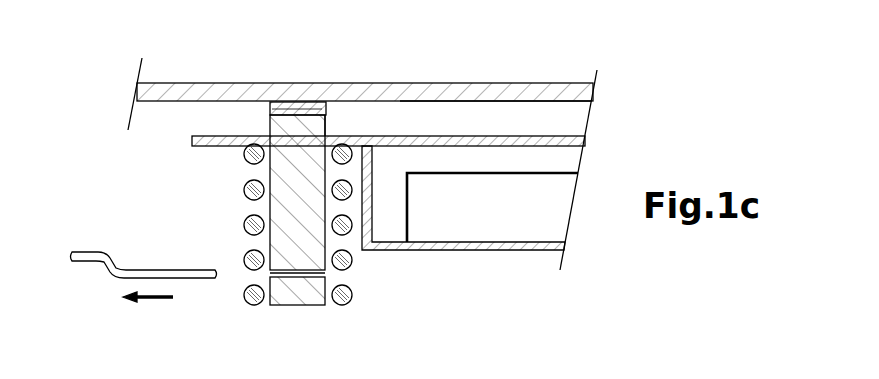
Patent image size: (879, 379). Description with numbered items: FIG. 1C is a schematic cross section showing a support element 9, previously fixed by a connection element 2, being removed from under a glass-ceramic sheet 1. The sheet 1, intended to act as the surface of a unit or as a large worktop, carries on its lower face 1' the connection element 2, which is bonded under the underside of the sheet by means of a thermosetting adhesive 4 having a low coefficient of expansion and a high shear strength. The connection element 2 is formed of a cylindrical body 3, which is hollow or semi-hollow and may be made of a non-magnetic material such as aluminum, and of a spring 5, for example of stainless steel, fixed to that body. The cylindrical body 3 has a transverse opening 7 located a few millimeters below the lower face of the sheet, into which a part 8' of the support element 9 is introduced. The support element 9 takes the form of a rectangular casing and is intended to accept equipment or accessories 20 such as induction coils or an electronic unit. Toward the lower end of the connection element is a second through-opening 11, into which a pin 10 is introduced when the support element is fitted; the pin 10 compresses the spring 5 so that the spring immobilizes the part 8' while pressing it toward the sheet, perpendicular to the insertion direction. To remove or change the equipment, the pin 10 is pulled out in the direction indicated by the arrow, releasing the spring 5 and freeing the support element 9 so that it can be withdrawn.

The glass-ceramic sheet 1 is at (365, 61).
The lower face 1' is at (517, 113).
The connection element 2 is at (246, 164).
The cylindrical body 3 is at (288, 218).
The thermosetting adhesive 4 is at (270, 108).
The spring 5 is at (352, 295).
The transverse opening 7 is at (330, 138).
The part of the support element 8' is at (297, 84).
The support element 9 is at (473, 258).
The pin 10 is at (88, 256).
The second through-opening 11 is at (326, 273).
The equipment or accessories 20 is at (542, 173).